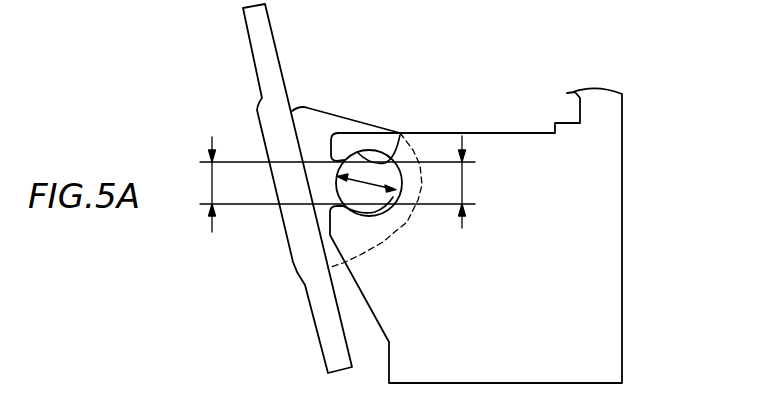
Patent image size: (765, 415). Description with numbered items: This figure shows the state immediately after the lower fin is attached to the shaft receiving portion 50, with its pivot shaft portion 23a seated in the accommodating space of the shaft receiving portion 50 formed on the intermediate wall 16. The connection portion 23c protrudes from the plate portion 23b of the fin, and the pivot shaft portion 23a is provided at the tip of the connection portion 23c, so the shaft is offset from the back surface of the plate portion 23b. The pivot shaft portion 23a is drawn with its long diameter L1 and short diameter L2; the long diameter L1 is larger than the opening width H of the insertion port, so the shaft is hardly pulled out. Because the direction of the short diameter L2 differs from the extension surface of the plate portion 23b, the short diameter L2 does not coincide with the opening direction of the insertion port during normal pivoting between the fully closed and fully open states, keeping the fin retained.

The intermediate wall 16 is at (605, 235).
The pivot shaft portion 23a is at (370, 173).
The plate portion 23b is at (253, 63).
The connection portion 23c is at (327, 113).
The shaft receiving portion 50 is at (360, 248).
The opening width H is at (334, 184).
The long diameter L1 is at (380, 202).
The short diameter L2 is at (462, 183).